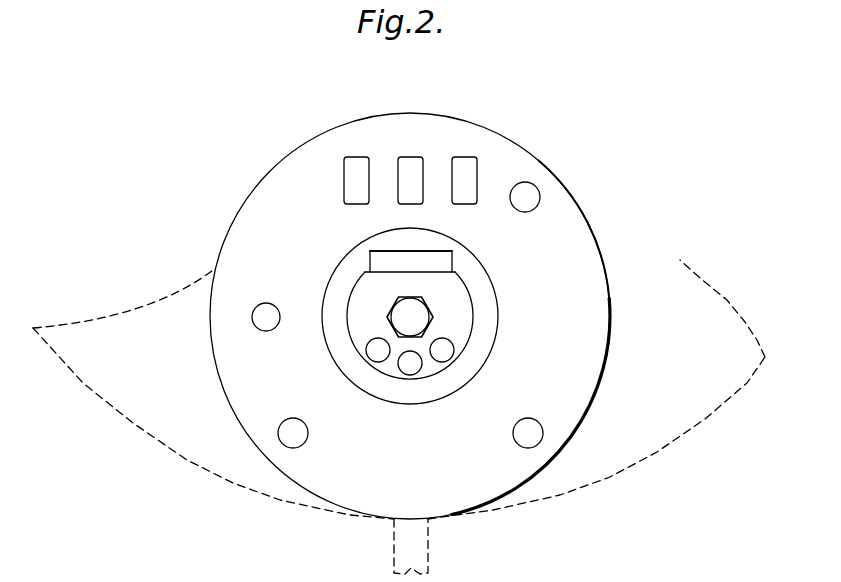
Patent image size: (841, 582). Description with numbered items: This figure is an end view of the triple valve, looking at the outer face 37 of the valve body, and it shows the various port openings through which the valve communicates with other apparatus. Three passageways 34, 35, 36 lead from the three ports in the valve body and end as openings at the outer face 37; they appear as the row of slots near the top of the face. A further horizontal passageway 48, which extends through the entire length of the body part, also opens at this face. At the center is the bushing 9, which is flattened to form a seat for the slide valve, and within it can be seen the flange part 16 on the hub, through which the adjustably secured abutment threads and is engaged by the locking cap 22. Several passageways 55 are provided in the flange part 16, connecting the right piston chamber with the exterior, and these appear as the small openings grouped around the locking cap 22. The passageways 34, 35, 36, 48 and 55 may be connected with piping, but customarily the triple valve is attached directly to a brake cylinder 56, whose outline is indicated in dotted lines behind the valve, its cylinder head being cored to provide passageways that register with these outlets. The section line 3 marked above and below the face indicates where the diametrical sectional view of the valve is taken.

The section line 3— 3 is at (426, 91).
The bushing 9 is at (337, 343).
The flange part 16 is at (463, 343).
The locking cap 22 is at (427, 320).
The passageway 34 is at (349, 158).
The passageway 35 is at (413, 162).
The passageway 36 is at (470, 163).
The outer face of the valve 37 is at (600, 318).
The horizontal passageway 48 is at (266, 318).
The passageways 55 is at (410, 374).
The brake cylinder 56 is at (192, 463).